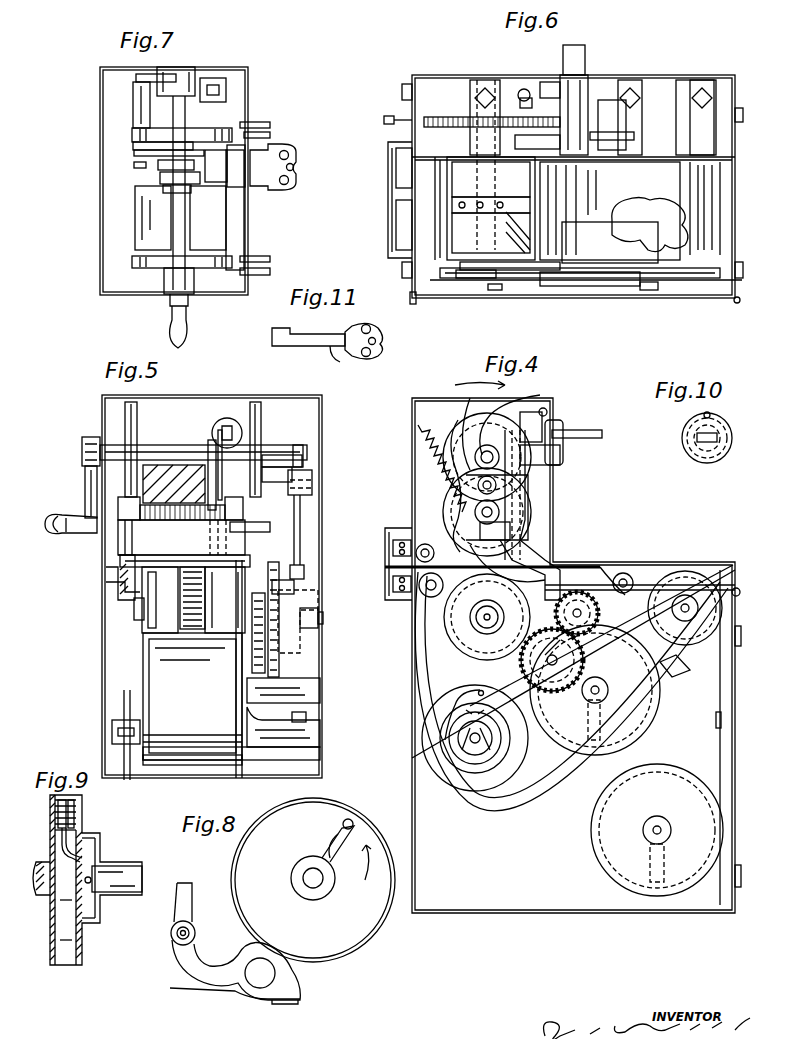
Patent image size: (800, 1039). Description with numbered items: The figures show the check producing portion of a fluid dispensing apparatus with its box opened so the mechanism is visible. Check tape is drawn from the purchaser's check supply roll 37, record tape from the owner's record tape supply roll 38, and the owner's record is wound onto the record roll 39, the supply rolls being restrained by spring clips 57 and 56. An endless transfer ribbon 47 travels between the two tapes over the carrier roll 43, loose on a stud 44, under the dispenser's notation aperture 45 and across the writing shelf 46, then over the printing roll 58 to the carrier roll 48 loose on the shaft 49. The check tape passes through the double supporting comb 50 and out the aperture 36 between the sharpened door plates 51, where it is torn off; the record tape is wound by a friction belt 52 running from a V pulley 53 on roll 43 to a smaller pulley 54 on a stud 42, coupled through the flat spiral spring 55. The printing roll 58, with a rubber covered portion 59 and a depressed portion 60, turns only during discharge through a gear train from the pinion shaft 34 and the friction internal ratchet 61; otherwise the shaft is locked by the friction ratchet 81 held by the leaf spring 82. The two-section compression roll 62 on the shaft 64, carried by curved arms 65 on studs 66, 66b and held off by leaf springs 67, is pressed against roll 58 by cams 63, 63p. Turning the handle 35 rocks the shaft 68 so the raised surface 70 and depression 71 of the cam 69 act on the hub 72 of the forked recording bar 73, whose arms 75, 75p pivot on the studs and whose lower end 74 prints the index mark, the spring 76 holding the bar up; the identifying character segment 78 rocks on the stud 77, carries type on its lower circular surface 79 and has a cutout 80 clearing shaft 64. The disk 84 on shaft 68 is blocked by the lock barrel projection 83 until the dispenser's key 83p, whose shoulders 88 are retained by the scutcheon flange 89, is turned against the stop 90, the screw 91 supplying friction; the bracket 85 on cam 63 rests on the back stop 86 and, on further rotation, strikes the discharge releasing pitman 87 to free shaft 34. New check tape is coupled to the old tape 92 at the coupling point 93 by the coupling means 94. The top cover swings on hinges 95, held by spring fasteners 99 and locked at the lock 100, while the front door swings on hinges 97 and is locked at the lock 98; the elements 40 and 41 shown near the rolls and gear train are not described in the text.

In FIG. 6, the pinion shaft 34 is at (586, 55).
In FIG. 5, the pinion shaft 34 is at (312, 622).
In FIG. 9, the pinion shaft 34 is at (135, 865).
In FIG. 8, the pinion shaft 34 is at (316, 892).
In FIG. 7, the handle 35 is at (186, 324).
In FIG. 5, the handle 35 is at (66, 535).
In FIG. 6, the aperture 36 is at (406, 185).
In FIG. 4, the aperture 36 is at (412, 590).
In FIG. 4, the purchaser's check supply roll 37 is at (657, 830).
In FIG. 6, the owner's record tape supply roll 38 is at (610, 207).
In FIG. 5, the owner's record tape supply roll 38 is at (192, 669).
In FIG. 4, the owner's record tape supply roll 38 is at (595, 690).
In FIG. 5, the owner's record roll 39 is at (223, 755).
In FIG. 4, the owner's record roll 39 is at (480, 783).
In FIG. 4, the hub 40 is at (652, 826).
In FIG. 5, the gear housing 41 is at (300, 693).
In FIG. 5, the stud 42 is at (300, 745).
In FIG. 4, the stud 42 is at (498, 745).
In FIG. 6, the carrier roll 43 is at (666, 208).
In FIG. 4, the carrier roll 43 is at (690, 585).
In FIG. 6, the stud 44 is at (700, 132).
In FIG. 4, the stud 44 is at (697, 607).
In FIG. 6, the dispenser's notation aperture 45 is at (610, 242).
In FIG. 4, the dispenser's notation aperture 45 is at (620, 598).
In FIG. 5, the writing shelf 46 is at (125, 600).
In FIG. 4, the transfer ribbon 47 is at (535, 810).
In FIG. 4, the carrier roll 48 is at (420, 620).
In FIG. 4, the shaft 49 is at (435, 588).
In FIG. 6, the double supporting comb 50 is at (402, 208).
In FIG. 4, the double supporting comb 50 is at (405, 556).
In FIG. 6, the door plates 51 is at (402, 230).
In FIG. 4, the door plates 51 is at (405, 570).
In FIG. 5, the friction belt 52 is at (122, 700).
In FIG. 4, the friction belt 52 is at (603, 660).
In FIG. 6, the V pulley 53 is at (742, 280).
In FIG. 4, the V pulley 53 is at (710, 572).
In FIG. 6, the pulley 54 is at (466, 285).
In FIG. 5, the pulley 54 is at (126, 770).
In FIG. 4, the pulley 54 is at (462, 738).
In FIG. 5, the flat spiral spring 55 is at (148, 740).
In FIG. 4, the flat spiral spring 55 is at (500, 712).
In FIG. 5, the spring clip 56 is at (300, 722).
In FIG. 4, the spring clip 56 is at (598, 724).
In FIG. 4, the spring clip 57 is at (662, 872).
In FIG. 6, the printing roll 58 is at (520, 228).
In FIG. 5, the printing roll 58 is at (180, 617).
In FIG. 4, the printing roll 58 is at (487, 617).
In FIG. 6, the rubber covered portion 59 is at (485, 208).
In FIG. 5, the rubber covered portion 59 is at (225, 600).
In FIG. 6, the depressed portion 60 is at (491, 225).
In FIG. 5, the depressed portion 60 is at (160, 600).
In FIG. 9, the friction internal ratchet 61 is at (82, 822).
In FIG. 8, the friction internal ratchet 61 is at (340, 825).
In FIG. 7, the compression roll 62 is at (134, 145).
In FIG. 5, the compression roll 62 is at (162, 466).
In FIG. 4, the compression roll 62 is at (520, 510).
In FIG. 7, the cam 63 is at (205, 131).
In FIG. 5, the cam 63 is at (262, 416).
In FIG. 4, the cam 63 is at (487, 456).
In FIG. 7, the cam 63p is at (147, 270).
In FIG. 5, the cam 63p is at (138, 418).
In FIG. 5, the shaft 64 is at (268, 514).
In FIG. 4, the shaft 64 is at (510, 522).
In FIG. 7, the curved arms 65 is at (268, 135).
In FIG. 6, the curved arms 65 is at (532, 290).
In FIG. 5, the curved arms 65 is at (108, 582).
In FIG. 4, the curved arms 65 is at (530, 548).
In FIG. 6, the studs 66 is at (626, 116).
In FIG. 4, the studs 66 is at (600, 590).
In FIG. 6, the studs 66b is at (648, 285).
In FIG. 4, the leaf springs 67 is at (610, 590).
In FIG. 7, the shaft 68 is at (172, 212).
In FIG. 5, the shaft 68 is at (190, 445).
In FIG. 7, the cam 69 is at (156, 181).
In FIG. 5, the cam 69 is at (212, 440).
In FIG. 4, the cam 69 is at (520, 460).
In FIG. 7, the raised surface 70 is at (165, 186).
In FIG. 4, the raised surface 70 is at (500, 483).
In FIG. 4, the depression 71 is at (540, 395).
In FIG. 4, the hub 72 is at (530, 493).
In FIG. 7, the recording bar 73 is at (228, 220).
In FIG. 5, the recording bar 73 is at (181, 536).
In FIG. 4, the recording bar 73 is at (545, 560).
In FIG. 5, the lower end 74 is at (198, 535).
In FIG. 4, the lower end 74 is at (482, 610).
In FIG. 7, the arm 75 is at (266, 273).
In FIG. 6, the arm 75 is at (588, 290).
In FIG. 5, the arm 75 is at (110, 568).
In FIG. 4, the arm 75 is at (605, 580).
In FIG. 7, the arm 75p is at (262, 126).
In FIG. 4, the spring 76 is at (432, 420).
In FIG. 5, the stud 77 is at (100, 481).
In FIG. 7, the identifying character segment 78 is at (148, 166).
In FIG. 5, the identifying character segment 78 is at (235, 525).
In FIG. 4, the identifying character segment 78 is at (425, 545).
In FIG. 5, the lower circular surface 79 is at (220, 540).
In FIG. 4, the lower circular surface 79 is at (428, 572).
In FIG. 7, the cutout 80 is at (136, 152).
In FIG. 5, the cutout 80 is at (225, 418).
In FIG. 4, the cutout 80 is at (573, 398).
In FIG. 5, the friction ratchet 81 is at (296, 655).
In FIG. 8, the friction ratchet 81 is at (250, 958).
In FIG. 8, the leaf spring 82 is at (192, 990).
In FIG. 7, the lock barrel projection 83 is at (297, 158).
In FIG. 4, the lock barrel projection 83 is at (545, 412).
In FIG. 7, the dispenser's key 83p is at (290, 186).
In FIG. 11, the dispenser's key 83p is at (382, 338).
In FIG. 4, the dispenser's key 83p is at (602, 440).
In FIG. 7, the disk 84 is at (136, 165).
In FIG. 5, the disk 84 is at (232, 420).
In FIG. 7, the projecting bracket 85 is at (134, 112).
In FIG. 5, the projecting bracket 85 is at (300, 448).
In FIG. 4, the projecting bracket 85 is at (458, 440).
In FIG. 7, the back stop 86 is at (140, 81).
In FIG. 5, the back stop 86 is at (304, 492).
In FIG. 7, the discharge releasing pitman 87 is at (222, 90).
In FIG. 6, the discharge releasing pitman 87 is at (540, 85).
In FIG. 5, the discharge releasing pitman 87 is at (300, 462).
In FIG. 4, the discharge releasing pitman 87 is at (500, 456).
In FIG. 8, the discharge releasing pitman 87 is at (192, 880).
In FIG. 11, the shoulders 88 is at (338, 352).
In FIG. 7, the flange 89 is at (225, 166).
In FIG. 4, the flange 89 is at (565, 438).
In FIG. 10, the stop 90 is at (722, 452).
In FIG. 7, the screw 91 is at (298, 170).
In FIG. 4, the screw 91 is at (555, 428).
In FIG. 10, the screw 91 is at (712, 418).
In FIG. 4, the old portion of purchaser's tape 92 is at (720, 690).
In FIG. 4, the coupling point 93 is at (716, 726).
In FIG. 4, the coupling means 94 is at (722, 716).
In FIG. 6, the hinges 95 is at (742, 115).
In FIG. 4, the hinges 95 is at (742, 590).
In FIG. 6, the hinges 97 is at (742, 300).
In FIG. 4, the hinges 97 is at (742, 640).
In FIG. 6, the lock 98 is at (414, 302).
In FIG. 5, the lock 98 is at (332, 728).
In FIG. 6, the spring fasteners 99 is at (406, 88).
In FIG. 6, the lock 100 is at (386, 120).